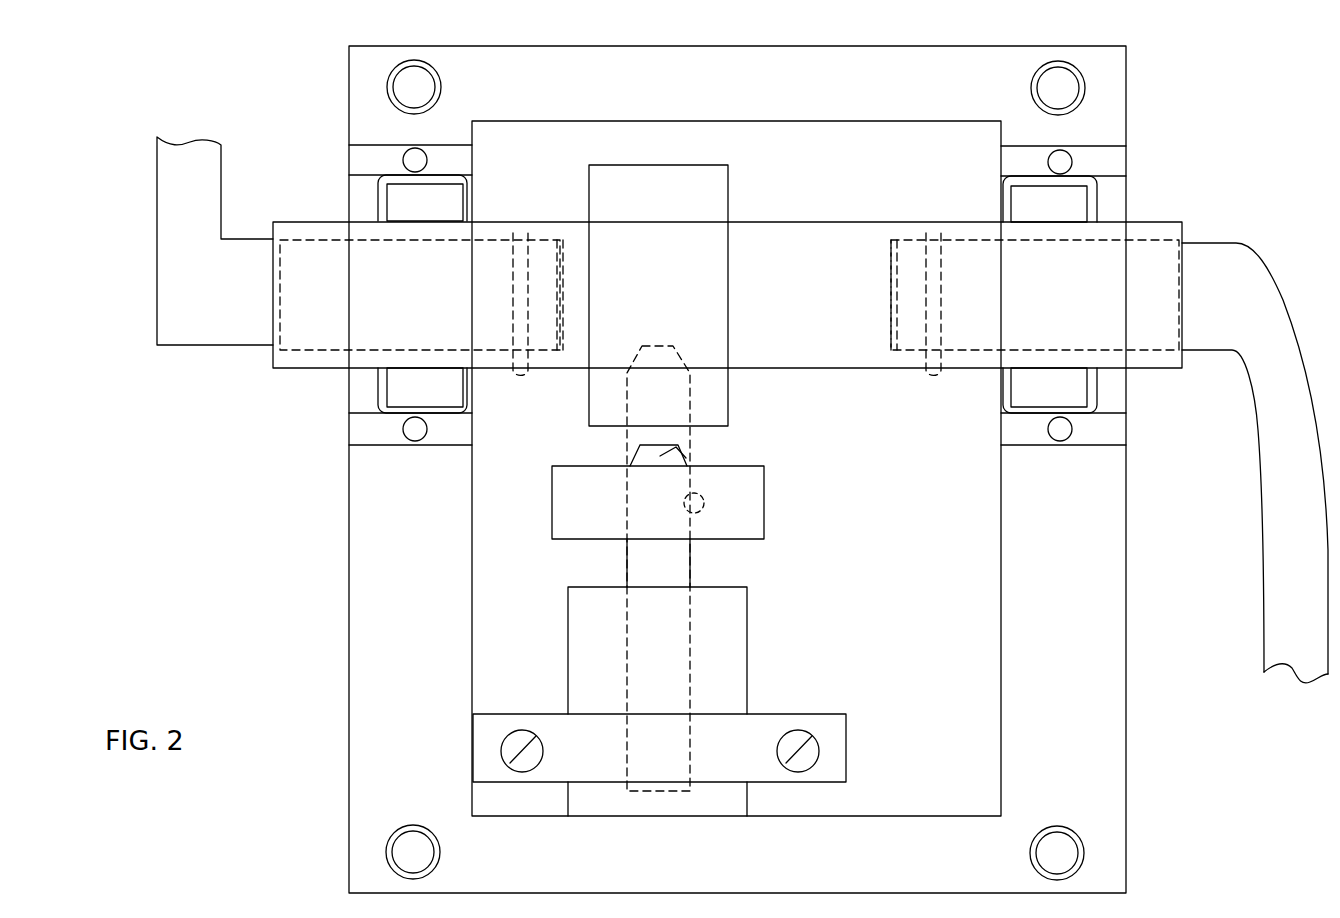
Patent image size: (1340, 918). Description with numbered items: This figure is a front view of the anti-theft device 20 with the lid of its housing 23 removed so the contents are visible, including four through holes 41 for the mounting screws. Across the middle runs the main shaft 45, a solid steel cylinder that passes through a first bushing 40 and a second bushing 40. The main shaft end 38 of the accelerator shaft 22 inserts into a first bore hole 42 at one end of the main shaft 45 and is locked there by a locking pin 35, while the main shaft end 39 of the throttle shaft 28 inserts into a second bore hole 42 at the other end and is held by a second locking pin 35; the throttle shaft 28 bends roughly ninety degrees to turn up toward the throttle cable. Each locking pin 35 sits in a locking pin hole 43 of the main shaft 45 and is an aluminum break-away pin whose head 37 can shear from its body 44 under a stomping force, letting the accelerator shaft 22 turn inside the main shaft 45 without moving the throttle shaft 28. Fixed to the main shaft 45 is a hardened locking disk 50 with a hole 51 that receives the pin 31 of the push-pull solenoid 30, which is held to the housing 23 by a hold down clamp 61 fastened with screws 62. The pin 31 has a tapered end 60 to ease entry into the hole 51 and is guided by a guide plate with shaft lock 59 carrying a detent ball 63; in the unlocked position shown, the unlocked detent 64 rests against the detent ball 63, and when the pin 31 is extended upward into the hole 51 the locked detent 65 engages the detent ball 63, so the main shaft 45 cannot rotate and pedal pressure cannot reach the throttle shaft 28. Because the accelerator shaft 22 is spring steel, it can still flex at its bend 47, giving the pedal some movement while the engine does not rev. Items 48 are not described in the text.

The anti-theft device 20 is at (298, 503).
The accelerator shaft 22 is at (1262, 541).
The housing 23 is at (349, 590).
The throttle shaft 28 is at (192, 347).
The push-pull solenoid 30 is at (725, 659).
The pin 31 is at (678, 445).
The locking pin 35 is at (526, 228).
The head 37 is at (513, 237).
The main shaft end 38 is at (890, 280).
The main shaft end 39 is at (560, 257).
The bushing 40 is at (400, 385).
The through hole 41 is at (412, 88).
The bore hole 42 is at (563, 305).
The locking pin hole 43 is at (513, 276).
The body 44 is at (513, 311).
The main shaft 45 is at (850, 362).
The bend 47 is at (1262, 256).
The retainer bracket 48 is at (377, 178).
The locking disk 50 is at (646, 165).
The hole 51 is at (680, 393).
The guide plate with shaft lock 59 is at (563, 520).
The tapered end 60 is at (640, 445).
The push-pull solenoid hold down clamp 61 is at (492, 720).
The screw 62 is at (510, 742).
The detent ball 63 is at (703, 503).
The unlocked detent 64 is at (695, 511).
The locked detent 65 is at (683, 598).